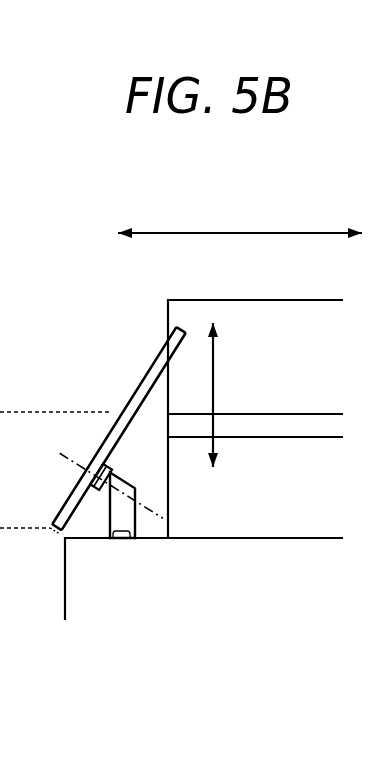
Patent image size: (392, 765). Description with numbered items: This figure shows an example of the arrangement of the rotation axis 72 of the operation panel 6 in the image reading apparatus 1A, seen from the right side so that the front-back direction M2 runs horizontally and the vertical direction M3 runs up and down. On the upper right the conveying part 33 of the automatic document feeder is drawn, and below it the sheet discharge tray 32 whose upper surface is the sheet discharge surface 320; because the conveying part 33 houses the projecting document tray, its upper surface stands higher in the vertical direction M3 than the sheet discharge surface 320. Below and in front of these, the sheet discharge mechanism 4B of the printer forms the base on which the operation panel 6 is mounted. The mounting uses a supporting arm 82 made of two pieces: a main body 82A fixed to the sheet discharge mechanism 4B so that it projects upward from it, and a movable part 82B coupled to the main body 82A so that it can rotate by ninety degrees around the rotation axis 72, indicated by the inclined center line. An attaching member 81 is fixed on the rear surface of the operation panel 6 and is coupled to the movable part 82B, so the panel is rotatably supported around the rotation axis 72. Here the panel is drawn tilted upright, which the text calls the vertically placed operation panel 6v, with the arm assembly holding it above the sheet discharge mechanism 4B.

The image reading apparatus 1A is at (300, 158).
The front-back direction M2 is at (240, 220).
The vertical direction M3 is at (229, 395).
The conveying part 33 is at (283, 310).
The sheet discharge surface 320 is at (288, 414).
The sheet discharge tray 32 is at (272, 425).
The sheet discharge mechanism 4B is at (75, 586).
The operation panel 6 is at (93, 430).
The operation panel (vertically placed) 6v is at (150, 366).
The rotation axis 72 is at (60, 456).
The attaching member 81 is at (100, 462).
The supporting arm 82 is at (158, 587).
The main body 82A is at (135, 520).
The movable part 82B is at (100, 494).